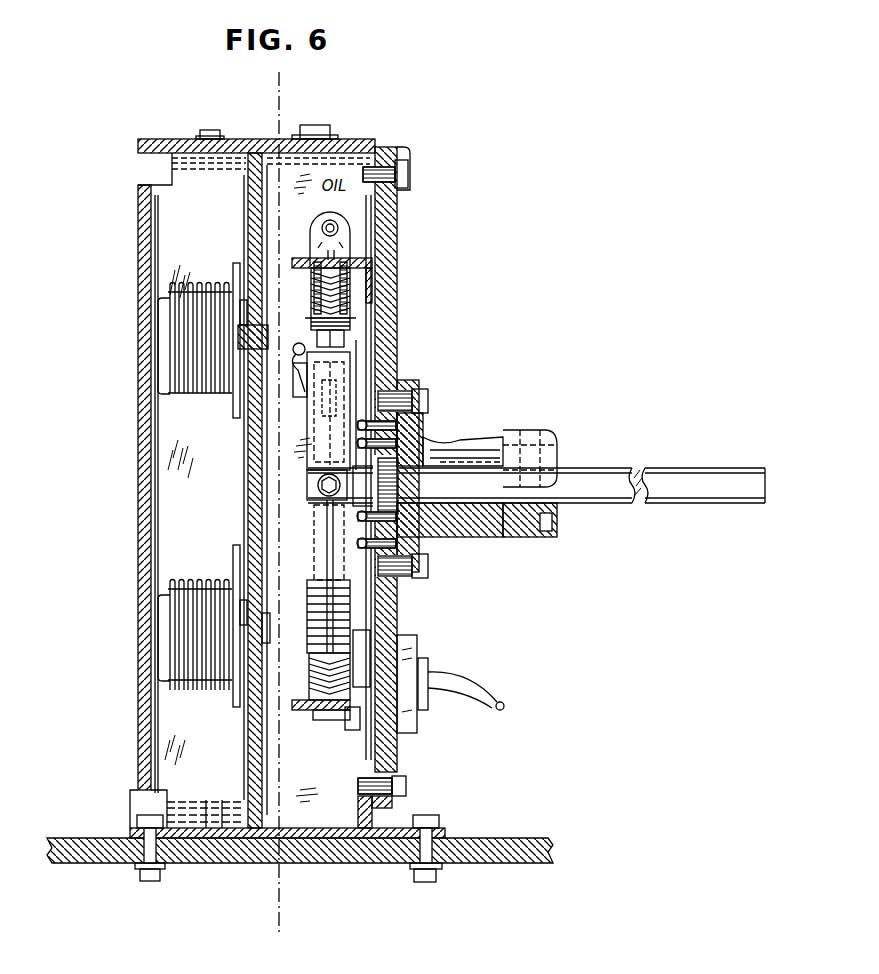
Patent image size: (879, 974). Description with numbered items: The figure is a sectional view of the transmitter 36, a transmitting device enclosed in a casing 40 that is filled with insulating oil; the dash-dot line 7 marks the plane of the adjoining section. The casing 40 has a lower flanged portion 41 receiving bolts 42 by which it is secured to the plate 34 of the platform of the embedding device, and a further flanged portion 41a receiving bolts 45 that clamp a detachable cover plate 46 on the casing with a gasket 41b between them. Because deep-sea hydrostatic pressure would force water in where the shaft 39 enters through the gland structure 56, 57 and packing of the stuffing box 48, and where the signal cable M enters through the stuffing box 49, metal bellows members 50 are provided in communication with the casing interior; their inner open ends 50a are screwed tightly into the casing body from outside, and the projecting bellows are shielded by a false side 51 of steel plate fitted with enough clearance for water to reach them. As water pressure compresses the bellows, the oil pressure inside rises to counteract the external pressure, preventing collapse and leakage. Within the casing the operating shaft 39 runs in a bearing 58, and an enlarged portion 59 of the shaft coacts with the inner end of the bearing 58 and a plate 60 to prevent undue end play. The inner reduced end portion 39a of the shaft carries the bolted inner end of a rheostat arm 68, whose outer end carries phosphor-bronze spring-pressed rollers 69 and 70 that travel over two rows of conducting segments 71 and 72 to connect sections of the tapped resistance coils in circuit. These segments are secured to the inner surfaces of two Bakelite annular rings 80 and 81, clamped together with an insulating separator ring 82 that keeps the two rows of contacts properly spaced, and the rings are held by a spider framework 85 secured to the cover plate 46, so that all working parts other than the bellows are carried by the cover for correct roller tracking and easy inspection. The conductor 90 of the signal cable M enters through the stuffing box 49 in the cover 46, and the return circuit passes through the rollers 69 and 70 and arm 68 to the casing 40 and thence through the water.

The section line 7 is at (300, 96).
The plate 34 is at (356, 864).
The transmitter 36 is at (401, 244).
The shaft 39 is at (632, 466).
The inner reduced end portion 39a is at (315, 488).
The casing 40 is at (352, 141).
The lower flanged portion 41 is at (392, 828).
The flanged portion 41a is at (358, 805).
The gasket 41b is at (393, 150).
The bolts 42 is at (142, 866).
The bolts 45 is at (408, 172).
The cover plate 46 is at (400, 310).
The stuffing box 48 is at (462, 442).
The stuffing box 49 is at (407, 642).
The bellows members 50 is at (178, 331).
The inner open ends 50a is at (270, 350).
The false side 51 is at (145, 448).
The gland structure 56 is at (538, 530).
The gland structure 57 is at (556, 516).
The bearing 58 is at (470, 512).
The enlarged portion 59 is at (386, 487).
The plate 60 is at (345, 508).
The rheostat arm 68 is at (335, 384).
The spring-pressed roller 69 is at (296, 344).
The spring-pressed roller 70 is at (340, 336).
The conducting segments 71 is at (318, 320).
The conducting segments 72 is at (352, 322).
The annular ring 80 is at (312, 680).
The annular ring 81 is at (345, 292).
The insulating separator ring 82 is at (312, 287).
The spider framework 85 is at (358, 352).
The conductor 90 is at (506, 708).
The signal cable M is at (480, 700).